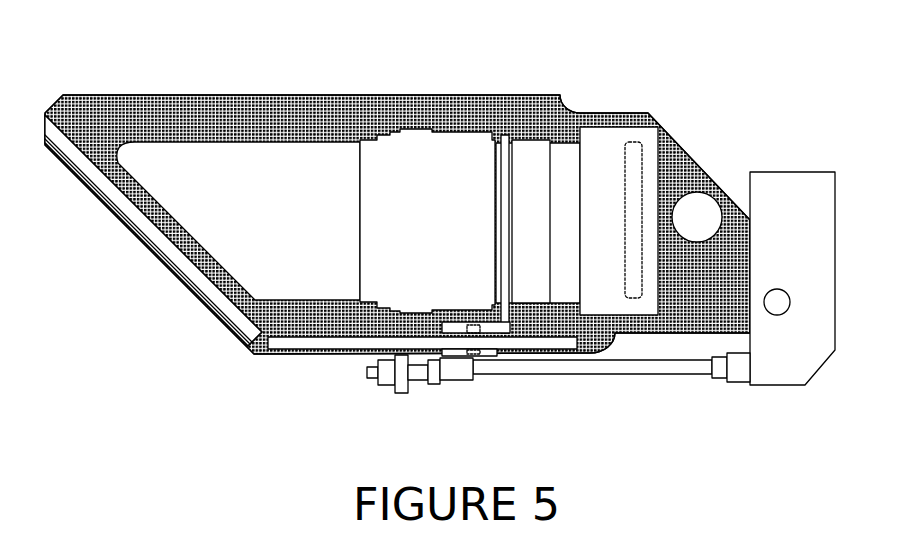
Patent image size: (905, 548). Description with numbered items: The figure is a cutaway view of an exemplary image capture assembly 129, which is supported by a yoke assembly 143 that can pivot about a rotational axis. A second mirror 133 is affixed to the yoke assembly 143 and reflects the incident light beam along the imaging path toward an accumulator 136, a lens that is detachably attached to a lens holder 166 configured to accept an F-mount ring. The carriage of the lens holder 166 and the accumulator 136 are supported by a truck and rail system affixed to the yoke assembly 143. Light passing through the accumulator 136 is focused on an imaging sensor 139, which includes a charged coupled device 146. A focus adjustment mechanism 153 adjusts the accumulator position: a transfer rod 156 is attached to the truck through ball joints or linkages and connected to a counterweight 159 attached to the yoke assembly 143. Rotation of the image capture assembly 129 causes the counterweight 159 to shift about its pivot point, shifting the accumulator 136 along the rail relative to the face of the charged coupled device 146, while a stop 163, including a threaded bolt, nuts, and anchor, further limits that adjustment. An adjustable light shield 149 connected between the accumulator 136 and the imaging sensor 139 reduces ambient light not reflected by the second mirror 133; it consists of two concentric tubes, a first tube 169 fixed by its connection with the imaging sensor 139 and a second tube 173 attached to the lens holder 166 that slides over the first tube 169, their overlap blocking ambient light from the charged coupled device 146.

The image capture assembly 129 is at (217, 62).
The second mirror 133 is at (180, 248).
The accumulator 136 is at (408, 234).
The imaging sensor 139 is at (650, 138).
The yoke assembly 143 is at (258, 105).
The charged coupled device 146 is at (632, 287).
The adjustable light shield 149 is at (543, 308).
The focus adjustment mechanism 153 is at (680, 405).
The transfer rod 156 is at (503, 368).
The counterweight 159 is at (813, 197).
The stop 163 is at (388, 368).
The lens holder 166 is at (502, 145).
The first tube 169 is at (565, 145).
The second tube 173 is at (530, 143).